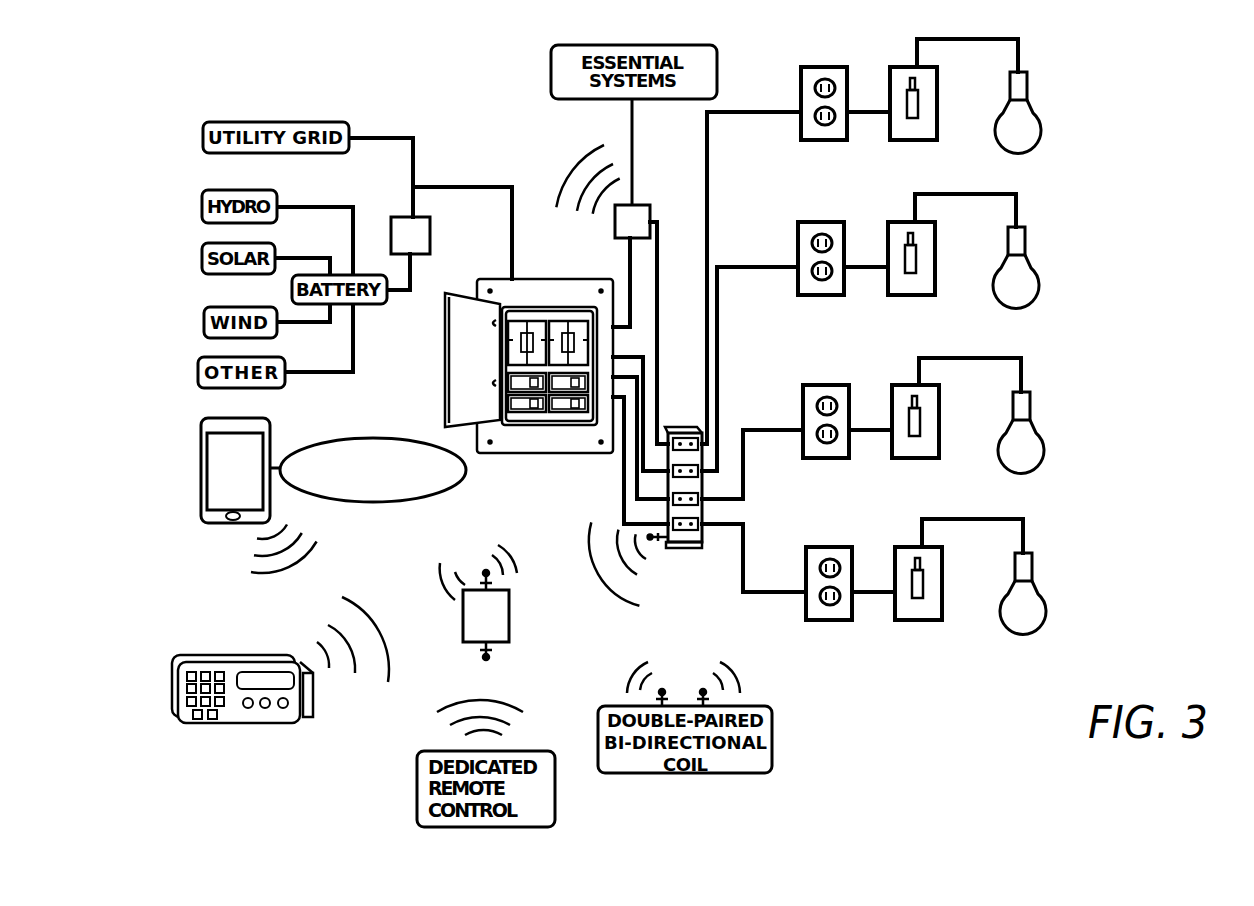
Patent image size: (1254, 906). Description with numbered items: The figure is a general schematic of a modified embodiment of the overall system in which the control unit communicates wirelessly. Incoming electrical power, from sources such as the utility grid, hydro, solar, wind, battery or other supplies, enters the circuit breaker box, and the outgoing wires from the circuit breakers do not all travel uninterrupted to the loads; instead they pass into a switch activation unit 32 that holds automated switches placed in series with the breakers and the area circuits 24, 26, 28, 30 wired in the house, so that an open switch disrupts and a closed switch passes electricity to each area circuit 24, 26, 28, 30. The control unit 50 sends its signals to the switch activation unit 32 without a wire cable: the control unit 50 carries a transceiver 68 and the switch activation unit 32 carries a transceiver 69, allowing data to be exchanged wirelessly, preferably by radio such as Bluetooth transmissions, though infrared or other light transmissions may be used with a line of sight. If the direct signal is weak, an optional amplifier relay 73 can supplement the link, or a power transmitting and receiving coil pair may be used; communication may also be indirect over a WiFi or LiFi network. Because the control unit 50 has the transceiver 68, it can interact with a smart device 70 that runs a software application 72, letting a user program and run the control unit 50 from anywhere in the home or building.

The area circuit 24 is at (764, 112).
The area circuit 26 is at (758, 267).
The area circuit 28 is at (773, 428).
The area circuit 30 is at (779, 590).
The switch activation unit 32 is at (680, 427).
The control unit 50 is at (215, 723).
The transceiver 68 is at (313, 705).
The transceiver 69 is at (693, 548).
The smart device 70 is at (200, 480).
The software application 72 is at (385, 437).
The amplifier relay 73 is at (509, 612).